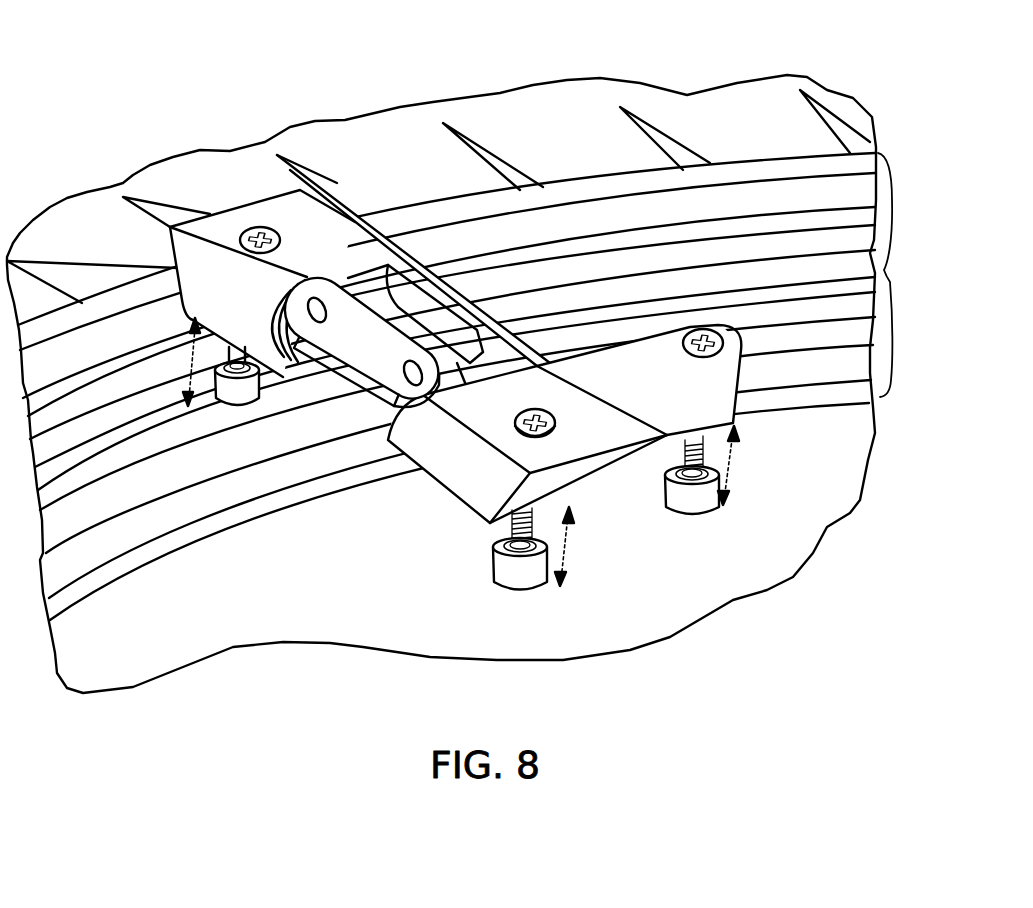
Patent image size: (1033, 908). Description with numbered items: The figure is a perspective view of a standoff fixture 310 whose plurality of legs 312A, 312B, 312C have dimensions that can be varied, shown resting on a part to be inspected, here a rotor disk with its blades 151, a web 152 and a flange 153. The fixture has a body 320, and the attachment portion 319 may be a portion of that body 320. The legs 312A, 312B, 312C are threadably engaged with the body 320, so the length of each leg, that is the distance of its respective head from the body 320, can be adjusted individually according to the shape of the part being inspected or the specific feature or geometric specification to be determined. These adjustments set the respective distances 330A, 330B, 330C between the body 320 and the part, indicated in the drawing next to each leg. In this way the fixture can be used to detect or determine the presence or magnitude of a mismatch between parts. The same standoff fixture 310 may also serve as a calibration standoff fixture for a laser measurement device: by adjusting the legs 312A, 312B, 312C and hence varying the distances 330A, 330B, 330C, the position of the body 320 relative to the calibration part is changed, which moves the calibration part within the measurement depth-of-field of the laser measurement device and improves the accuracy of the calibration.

The blades 151 is at (520, 133).
The web 152 is at (430, 581).
The flange 153 is at (900, 275).
The standoff fixture 310 is at (782, 432).
The leg 312A is at (227, 395).
The leg 312B is at (688, 505).
The leg 312C is at (517, 575).
The attachment portion 319 is at (380, 356).
The body 320 is at (300, 222).
The distance 330A is at (185, 340).
The distance 330B is at (733, 467).
The distance 330C is at (562, 542).